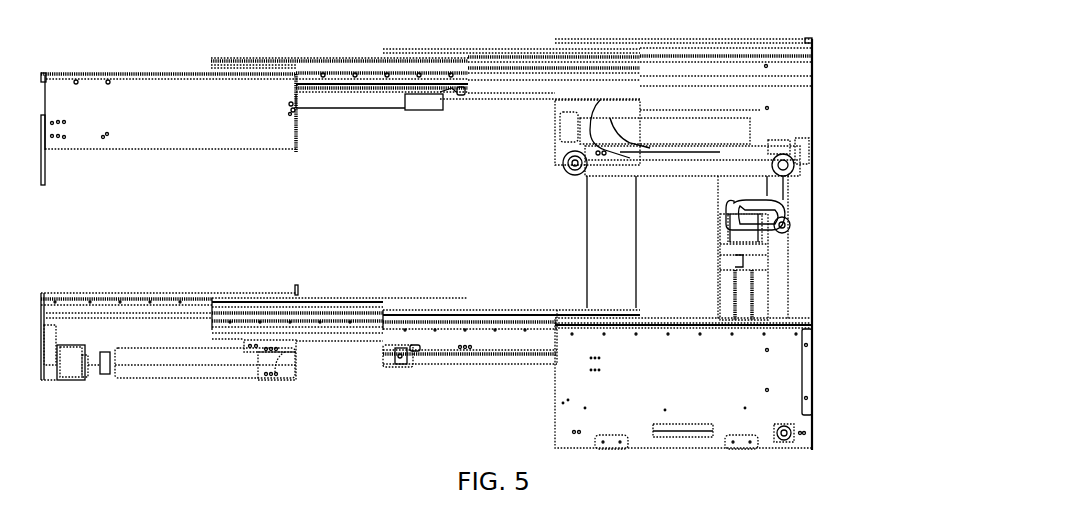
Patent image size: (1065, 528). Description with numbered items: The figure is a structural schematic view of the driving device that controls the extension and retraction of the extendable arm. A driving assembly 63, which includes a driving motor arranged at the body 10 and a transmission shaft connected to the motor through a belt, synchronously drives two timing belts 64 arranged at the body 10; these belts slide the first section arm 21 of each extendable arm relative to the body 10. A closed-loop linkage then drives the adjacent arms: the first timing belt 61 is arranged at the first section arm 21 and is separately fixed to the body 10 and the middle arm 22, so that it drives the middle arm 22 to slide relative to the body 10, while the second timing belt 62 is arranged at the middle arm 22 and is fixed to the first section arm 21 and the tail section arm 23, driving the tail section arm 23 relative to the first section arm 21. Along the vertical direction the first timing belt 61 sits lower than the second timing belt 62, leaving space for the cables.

The body 10 is at (782, 365).
The first section arm 21 is at (488, 315).
The middle arm 22 is at (327, 303).
The tail section arm 23 is at (157, 307).
The first timing belt 61 is at (437, 365).
The second timing belt 62 is at (288, 376).
The driving assembly 63 is at (806, 203).
The timing belts 64 is at (780, 131).